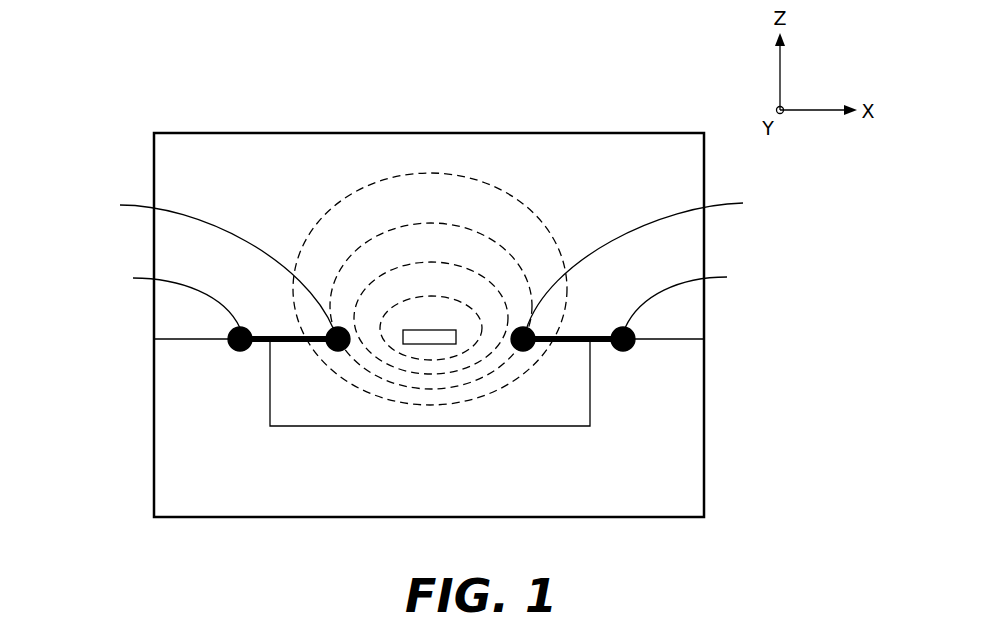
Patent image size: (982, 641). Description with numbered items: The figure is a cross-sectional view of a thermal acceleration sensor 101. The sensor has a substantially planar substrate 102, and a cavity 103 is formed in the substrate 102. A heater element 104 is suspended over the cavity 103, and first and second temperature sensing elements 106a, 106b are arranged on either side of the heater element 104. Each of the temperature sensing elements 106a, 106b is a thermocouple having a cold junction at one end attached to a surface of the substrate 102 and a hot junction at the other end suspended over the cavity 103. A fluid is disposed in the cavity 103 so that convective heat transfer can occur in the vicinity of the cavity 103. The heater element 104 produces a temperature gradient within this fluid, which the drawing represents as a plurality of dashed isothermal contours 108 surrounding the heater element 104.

The thermal acceleration sensor 101 is at (160, 86).
The substrate 102 is at (704, 433).
The cavity 103 is at (307, 405).
The heater element 104 is at (428, 330).
The first temperature sensing element 106a is at (250, 350).
The second temperature sensing element 106b is at (610, 353).
The isothermal contours 108 is at (390, 172).